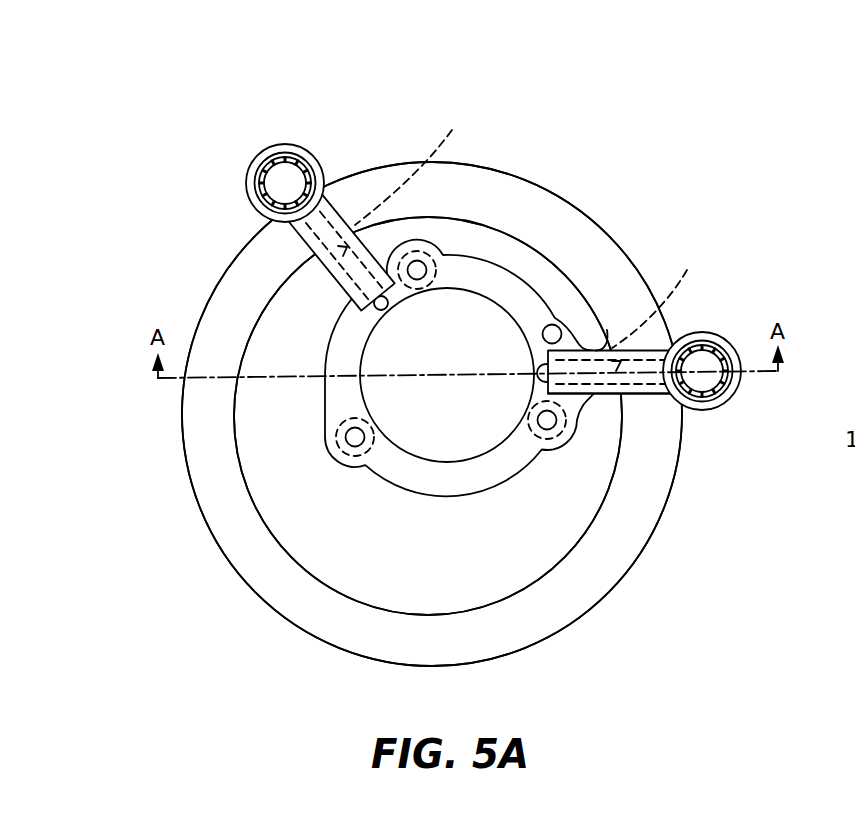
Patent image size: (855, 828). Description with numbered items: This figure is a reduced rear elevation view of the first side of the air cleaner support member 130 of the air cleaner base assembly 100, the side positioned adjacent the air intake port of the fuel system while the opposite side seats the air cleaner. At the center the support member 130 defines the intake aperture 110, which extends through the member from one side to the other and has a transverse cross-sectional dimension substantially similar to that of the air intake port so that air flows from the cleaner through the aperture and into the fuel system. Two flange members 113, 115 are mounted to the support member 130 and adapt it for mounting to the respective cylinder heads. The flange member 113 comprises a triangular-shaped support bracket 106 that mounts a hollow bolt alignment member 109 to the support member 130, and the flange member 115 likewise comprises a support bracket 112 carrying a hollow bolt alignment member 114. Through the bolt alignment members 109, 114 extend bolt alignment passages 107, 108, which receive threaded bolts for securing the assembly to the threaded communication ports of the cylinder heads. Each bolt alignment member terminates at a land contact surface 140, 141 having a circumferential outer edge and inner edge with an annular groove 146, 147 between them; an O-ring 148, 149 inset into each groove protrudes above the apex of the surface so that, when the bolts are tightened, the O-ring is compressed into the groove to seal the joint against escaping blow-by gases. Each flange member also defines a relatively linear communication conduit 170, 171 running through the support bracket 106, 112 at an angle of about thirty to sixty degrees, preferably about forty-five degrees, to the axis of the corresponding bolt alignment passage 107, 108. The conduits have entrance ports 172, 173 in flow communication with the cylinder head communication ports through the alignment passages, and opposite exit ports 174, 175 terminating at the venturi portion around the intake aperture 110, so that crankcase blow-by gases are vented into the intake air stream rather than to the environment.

The air cleaner base assembly 100 is at (571, 124).
The support bracket 106 is at (272, 257).
The bolt alignment passage 107 is at (288, 175).
The bolt alignment passage 108 is at (702, 378).
The bolt alignment member 109 is at (302, 170).
The intake aperture 110 is at (438, 437).
The support bracket 112 is at (630, 397).
The flange member 113 is at (225, 154).
The bolt alignment member 114 is at (733, 350).
The flange member 115 is at (759, 392).
The air cleaner support member 130 is at (280, 583).
The land contact surface 140 is at (256, 170).
The land contact surface 141 is at (730, 388).
The annular groove 146 is at (258, 198).
The annular groove 147 is at (710, 345).
The O-ring 148 is at (312, 168).
The O-ring 149 is at (683, 408).
The communication conduit 170 is at (628, 313).
The communication conduit 171 is at (418, 163).
The entrance port 172 is at (672, 347).
The entrance port 173 is at (330, 182).
The exit port 174 is at (562, 322).
The exit port 175 is at (418, 277).